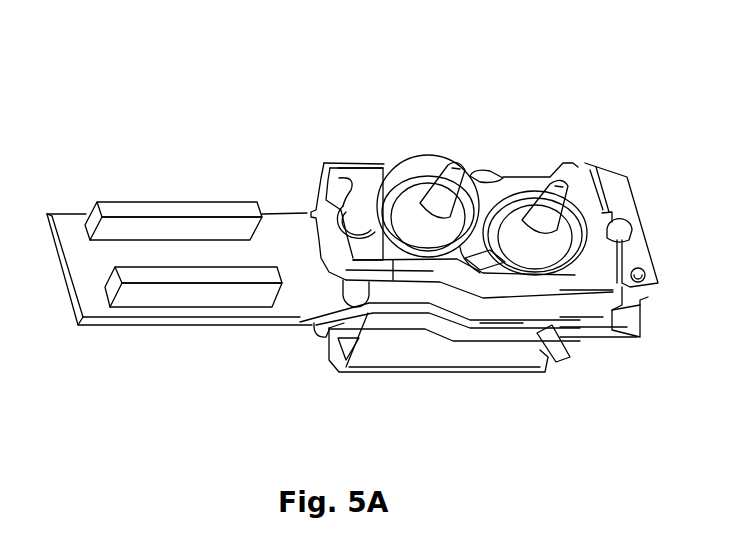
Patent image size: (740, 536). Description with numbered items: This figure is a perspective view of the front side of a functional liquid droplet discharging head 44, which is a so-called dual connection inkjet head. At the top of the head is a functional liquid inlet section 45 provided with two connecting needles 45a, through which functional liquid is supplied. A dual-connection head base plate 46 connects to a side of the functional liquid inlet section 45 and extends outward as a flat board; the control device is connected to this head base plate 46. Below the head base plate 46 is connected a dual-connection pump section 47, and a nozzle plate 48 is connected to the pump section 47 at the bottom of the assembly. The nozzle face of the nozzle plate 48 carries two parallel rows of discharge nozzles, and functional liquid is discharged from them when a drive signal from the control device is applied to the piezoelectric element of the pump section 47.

The functional liquid droplet discharging head 44 is at (405, 67).
The functional liquid inlet section 45 is at (356, 162).
The connecting needles 45a is at (555, 180).
The dual-connection head base plate 46 is at (80, 212).
The dual-connection pump section 47 is at (548, 366).
The nozzle plate 48 is at (415, 372).